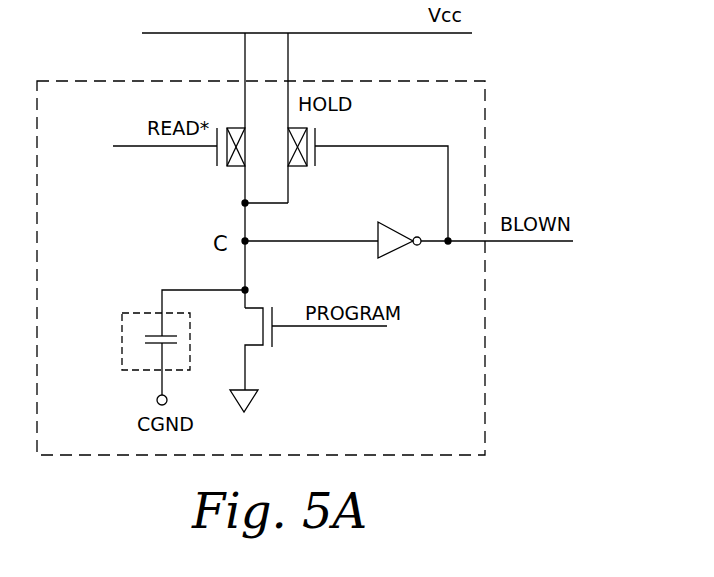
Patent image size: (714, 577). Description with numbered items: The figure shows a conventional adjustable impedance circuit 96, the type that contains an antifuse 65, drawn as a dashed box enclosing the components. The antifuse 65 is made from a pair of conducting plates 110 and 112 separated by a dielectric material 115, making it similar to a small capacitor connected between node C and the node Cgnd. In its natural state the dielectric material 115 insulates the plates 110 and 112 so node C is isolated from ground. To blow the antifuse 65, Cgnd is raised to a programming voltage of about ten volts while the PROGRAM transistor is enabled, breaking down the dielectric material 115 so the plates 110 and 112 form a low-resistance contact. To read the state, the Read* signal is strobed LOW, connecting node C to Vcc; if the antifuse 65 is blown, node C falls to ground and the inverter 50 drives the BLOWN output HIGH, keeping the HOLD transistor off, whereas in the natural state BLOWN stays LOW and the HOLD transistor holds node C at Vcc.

The adjustable impedance circuit 96 is at (487, 120).
The inverter 50 is at (395, 222).
The antifuse 65 is at (198, 343).
The conducting plate 110 is at (152, 333).
The conducting plate 112 is at (150, 350).
The dielectric material 115 is at (124, 339).